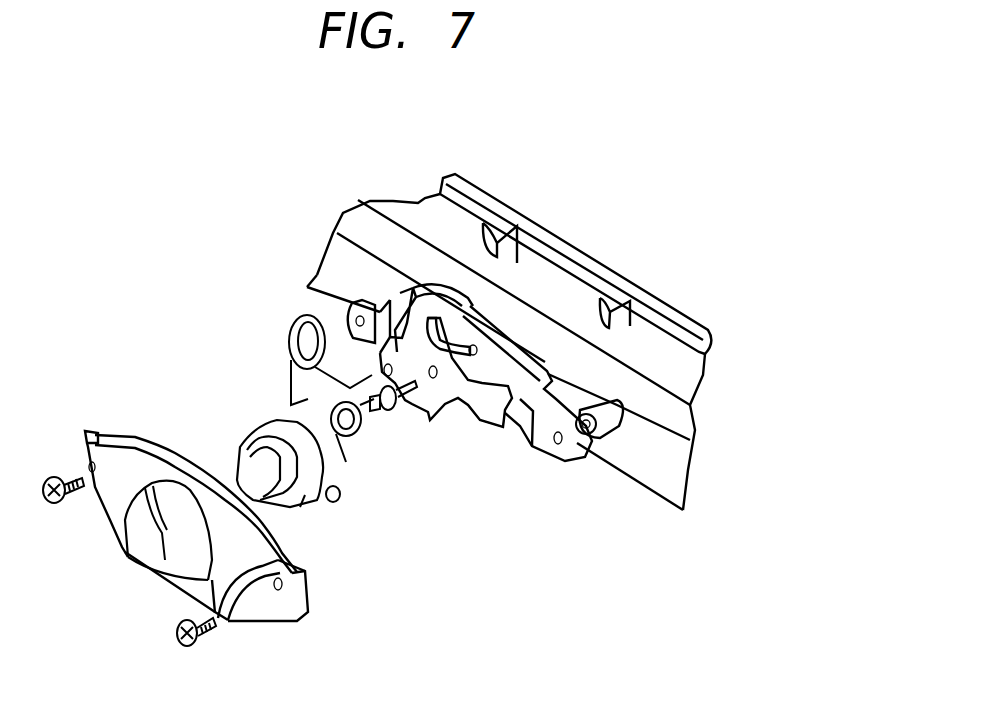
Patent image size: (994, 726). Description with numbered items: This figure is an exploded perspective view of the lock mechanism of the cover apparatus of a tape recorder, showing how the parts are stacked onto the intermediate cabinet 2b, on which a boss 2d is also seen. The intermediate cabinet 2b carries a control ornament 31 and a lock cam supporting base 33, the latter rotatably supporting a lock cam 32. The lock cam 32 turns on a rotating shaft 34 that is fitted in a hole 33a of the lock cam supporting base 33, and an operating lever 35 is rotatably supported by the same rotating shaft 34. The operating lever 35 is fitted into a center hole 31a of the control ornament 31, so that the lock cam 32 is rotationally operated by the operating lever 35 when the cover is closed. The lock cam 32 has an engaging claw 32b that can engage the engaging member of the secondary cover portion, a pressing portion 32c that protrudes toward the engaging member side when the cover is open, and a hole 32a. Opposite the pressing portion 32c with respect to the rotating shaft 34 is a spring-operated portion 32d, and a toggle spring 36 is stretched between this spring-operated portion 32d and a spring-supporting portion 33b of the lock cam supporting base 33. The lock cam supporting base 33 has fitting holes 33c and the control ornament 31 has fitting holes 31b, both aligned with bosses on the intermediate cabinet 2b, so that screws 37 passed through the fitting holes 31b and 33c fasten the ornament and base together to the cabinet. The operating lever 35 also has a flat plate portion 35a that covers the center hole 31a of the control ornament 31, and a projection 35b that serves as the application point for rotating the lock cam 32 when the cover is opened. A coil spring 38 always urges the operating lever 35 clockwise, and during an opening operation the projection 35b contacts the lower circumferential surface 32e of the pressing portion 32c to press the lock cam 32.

The intermediate cabinet 2b is at (655, 352).
The pivot boss 2d is at (588, 434).
The control ornament 31 is at (231, 596).
The center hole 31a is at (178, 527).
The fitting holes 31b is at (92, 473).
The lock cam 32 is at (442, 347).
The hole 32a is at (433, 380).
The engaging claw 32b is at (458, 320).
The pressing portion 32c is at (498, 400).
The spring-operated portion 32d is at (300, 364).
The lower circumferential surface 32e is at (467, 425).
The lock cam supporting base 33 is at (520, 426).
The hole 33a is at (473, 346).
The spring-supporting portion 33b is at (400, 300).
The fitting holes 33c is at (350, 310).
The rotating shaft 34 is at (378, 412).
The operating lever 35 is at (260, 438).
The flat plate portion 35a is at (307, 498).
The projection 35b is at (330, 503).
The toggle spring 36 is at (287, 323).
The screws 37 is at (57, 507).
The spring (coil spring) 38 is at (349, 440).